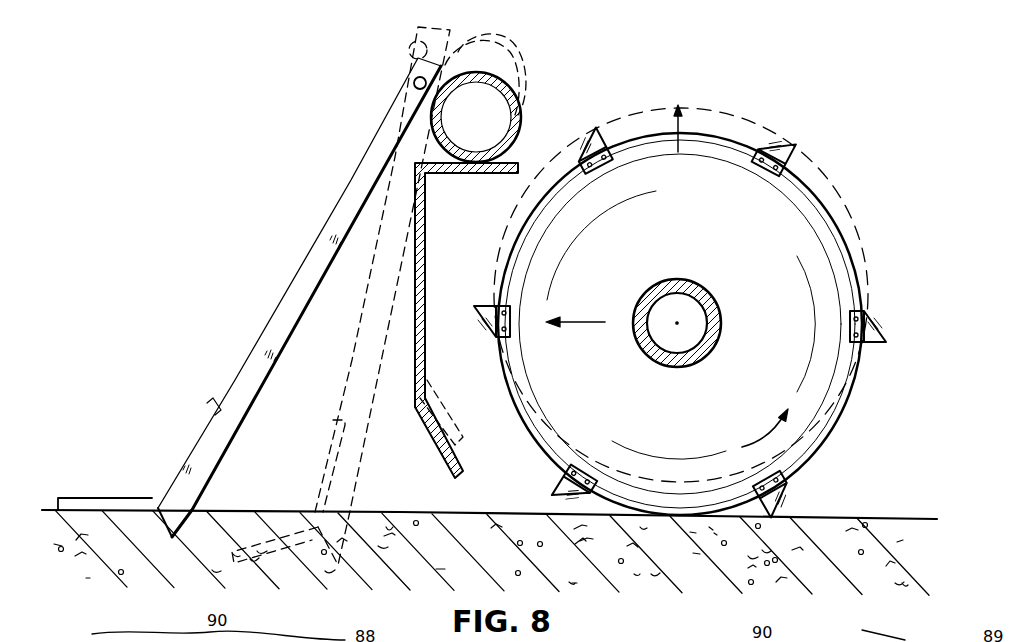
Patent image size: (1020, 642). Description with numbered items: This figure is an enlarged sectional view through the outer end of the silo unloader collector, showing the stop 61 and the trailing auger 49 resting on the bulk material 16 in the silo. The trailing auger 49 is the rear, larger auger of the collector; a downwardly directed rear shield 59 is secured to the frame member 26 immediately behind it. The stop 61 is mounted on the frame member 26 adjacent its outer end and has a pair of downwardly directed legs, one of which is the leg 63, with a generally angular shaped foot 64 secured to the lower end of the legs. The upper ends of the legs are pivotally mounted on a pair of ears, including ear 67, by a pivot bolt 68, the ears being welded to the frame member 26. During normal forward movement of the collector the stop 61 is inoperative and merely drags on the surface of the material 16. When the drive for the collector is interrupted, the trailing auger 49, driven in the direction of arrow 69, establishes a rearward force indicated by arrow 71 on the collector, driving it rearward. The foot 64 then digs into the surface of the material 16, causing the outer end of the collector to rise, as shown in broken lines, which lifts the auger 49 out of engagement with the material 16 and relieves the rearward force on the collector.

The bulk material 16 is at (862, 528).
The frame member 26 is at (518, 116).
The trailing auger 49 is at (828, 262).
The rear shield 59 is at (424, 272).
The stop 61 is at (312, 183).
The leg 63 is at (304, 277).
The foot 64 is at (118, 498).
The ear 67 is at (446, 76).
The pivot bolt 68 is at (414, 80).
The arrow indicating auger rotation direction 69 is at (742, 447).
The arrow indicating rearward force 71 is at (590, 320).